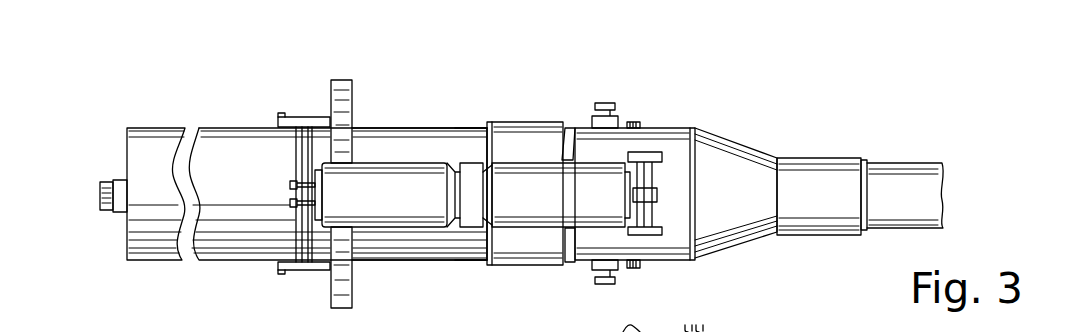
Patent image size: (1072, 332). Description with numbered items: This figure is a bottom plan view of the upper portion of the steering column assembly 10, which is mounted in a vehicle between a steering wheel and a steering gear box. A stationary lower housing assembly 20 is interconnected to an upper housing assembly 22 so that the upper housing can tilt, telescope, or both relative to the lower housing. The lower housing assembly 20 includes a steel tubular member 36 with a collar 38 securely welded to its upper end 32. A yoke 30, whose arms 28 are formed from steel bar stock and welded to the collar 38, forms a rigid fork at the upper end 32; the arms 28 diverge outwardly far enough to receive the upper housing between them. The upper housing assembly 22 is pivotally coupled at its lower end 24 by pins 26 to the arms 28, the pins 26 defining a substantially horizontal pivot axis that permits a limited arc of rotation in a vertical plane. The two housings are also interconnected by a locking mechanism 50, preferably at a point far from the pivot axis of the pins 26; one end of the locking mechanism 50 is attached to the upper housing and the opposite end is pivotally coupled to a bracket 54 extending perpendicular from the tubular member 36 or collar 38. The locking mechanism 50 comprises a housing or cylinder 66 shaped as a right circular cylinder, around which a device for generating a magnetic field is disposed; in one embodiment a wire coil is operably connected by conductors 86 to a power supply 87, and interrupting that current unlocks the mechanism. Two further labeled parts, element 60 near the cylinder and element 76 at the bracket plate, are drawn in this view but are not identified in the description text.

The steering column assembly 10 is at (762, 70).
The lower housing assembly 20 is at (182, 93).
The upper housing assembly 22 is at (745, 128).
The lower end 24 is at (562, 142).
The pins 26 is at (618, 112).
The arms 28 is at (630, 125).
The yoke 30 is at (492, 117).
The upper end 32 is at (465, 127).
The tubular member 36 is at (399, 132).
The collar 38 is at (533, 132).
The locking mechanism 50 is at (532, 237).
The bracket 54 is at (303, 115).
The bracket 60 is at (657, 195).
The housing or cylinder 66 is at (400, 204).
The plate 76 is at (297, 158).
The conductors 86 is at (623, 331).
The power supply 87 is at (715, 331).